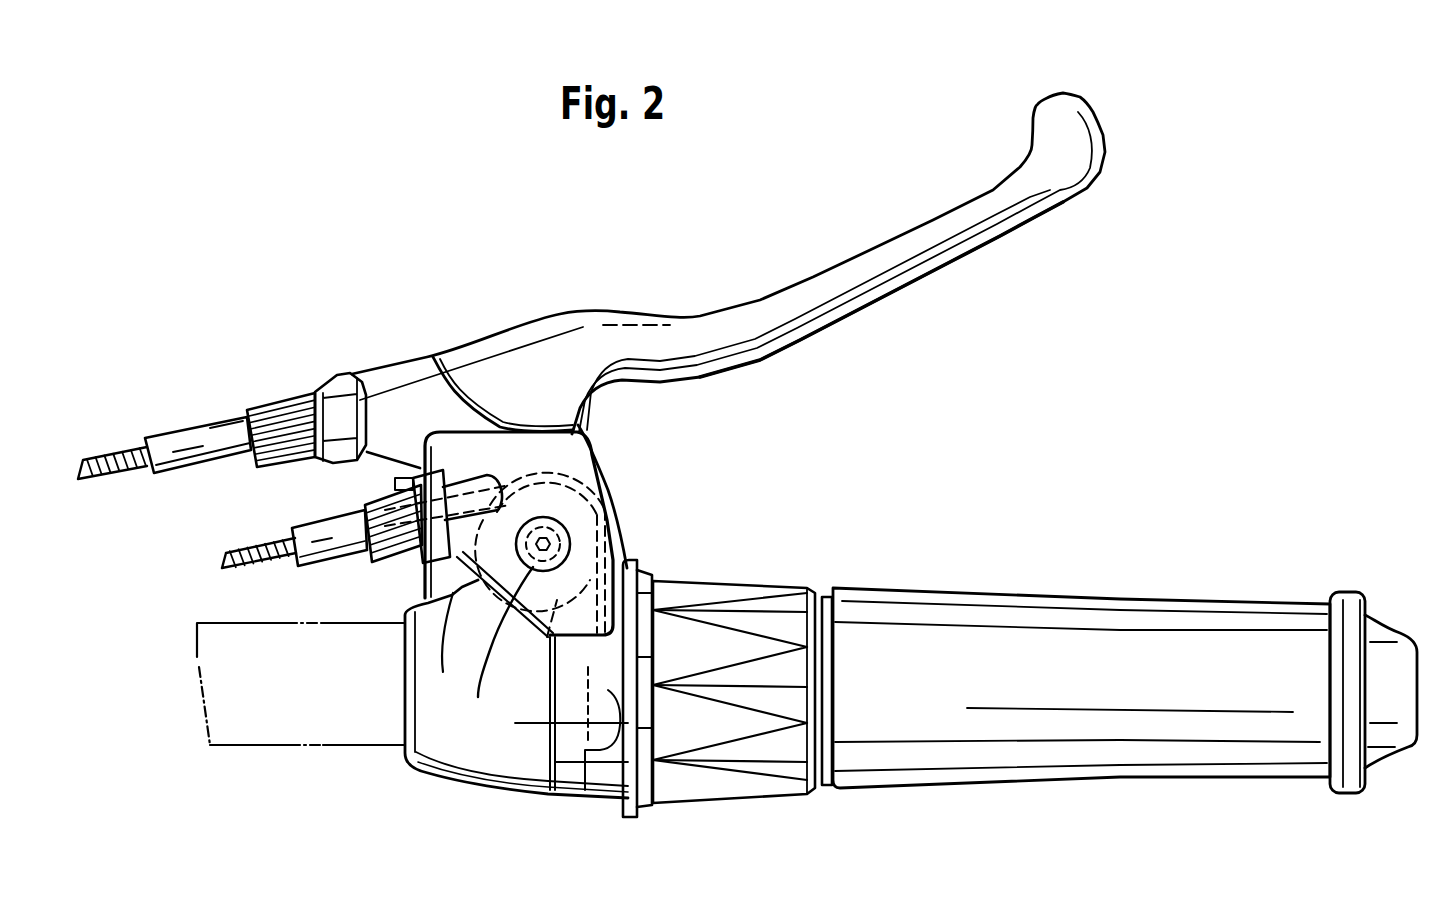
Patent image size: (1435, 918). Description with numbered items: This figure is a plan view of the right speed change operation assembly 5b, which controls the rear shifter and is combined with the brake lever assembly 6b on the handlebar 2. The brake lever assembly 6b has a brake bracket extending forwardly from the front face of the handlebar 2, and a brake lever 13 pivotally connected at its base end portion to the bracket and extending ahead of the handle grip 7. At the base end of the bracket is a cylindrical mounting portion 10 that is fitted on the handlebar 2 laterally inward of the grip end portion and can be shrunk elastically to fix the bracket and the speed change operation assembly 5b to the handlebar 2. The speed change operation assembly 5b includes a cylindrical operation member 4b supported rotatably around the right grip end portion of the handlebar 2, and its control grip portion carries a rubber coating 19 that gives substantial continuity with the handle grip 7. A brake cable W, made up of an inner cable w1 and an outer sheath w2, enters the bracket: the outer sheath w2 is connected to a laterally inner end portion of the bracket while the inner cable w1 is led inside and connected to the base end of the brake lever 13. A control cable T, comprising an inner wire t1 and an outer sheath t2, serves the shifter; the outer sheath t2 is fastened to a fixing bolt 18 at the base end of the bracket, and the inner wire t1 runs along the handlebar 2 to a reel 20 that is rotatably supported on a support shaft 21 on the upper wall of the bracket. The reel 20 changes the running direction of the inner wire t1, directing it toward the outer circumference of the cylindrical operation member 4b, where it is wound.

The handlebar 2 is at (262, 750).
The cylindrical operation member 4b is at (743, 797).
The speed change operation assembly 5b is at (865, 798).
The brake lever assembly 6b is at (452, 298).
The handle grip 7 is at (1115, 787).
The cylindrical mounting portion 10 is at (435, 777).
The brake lever 13 is at (813, 277).
The fixing bolt 18 is at (403, 562).
The rubber coating 19 is at (741, 578).
The reel 20 is at (547, 637).
The support shaft 21 is at (415, 713).
The inner wire t1 is at (278, 565).
The outer sheath t2 is at (343, 568).
The control cable T is at (370, 676).
The inner cable w1 is at (115, 478).
The outer sheath w2 is at (188, 480).
The brake cable W is at (207, 553).